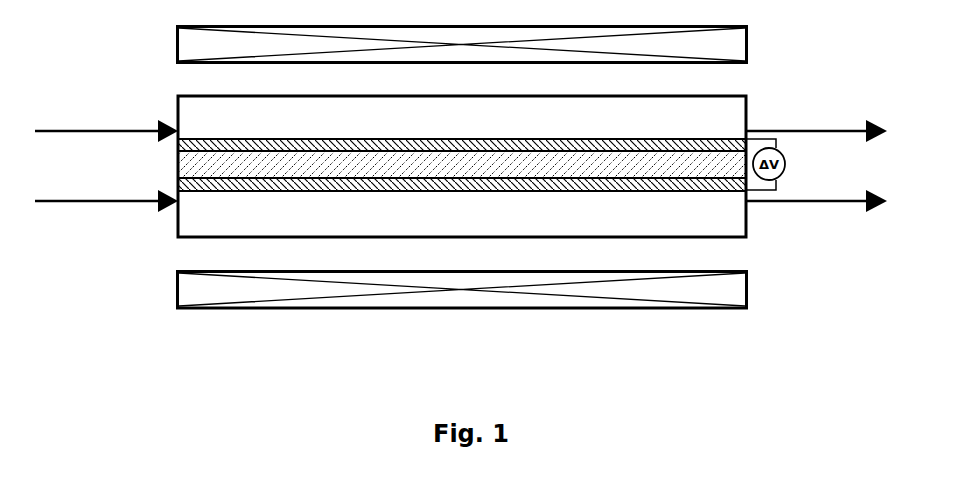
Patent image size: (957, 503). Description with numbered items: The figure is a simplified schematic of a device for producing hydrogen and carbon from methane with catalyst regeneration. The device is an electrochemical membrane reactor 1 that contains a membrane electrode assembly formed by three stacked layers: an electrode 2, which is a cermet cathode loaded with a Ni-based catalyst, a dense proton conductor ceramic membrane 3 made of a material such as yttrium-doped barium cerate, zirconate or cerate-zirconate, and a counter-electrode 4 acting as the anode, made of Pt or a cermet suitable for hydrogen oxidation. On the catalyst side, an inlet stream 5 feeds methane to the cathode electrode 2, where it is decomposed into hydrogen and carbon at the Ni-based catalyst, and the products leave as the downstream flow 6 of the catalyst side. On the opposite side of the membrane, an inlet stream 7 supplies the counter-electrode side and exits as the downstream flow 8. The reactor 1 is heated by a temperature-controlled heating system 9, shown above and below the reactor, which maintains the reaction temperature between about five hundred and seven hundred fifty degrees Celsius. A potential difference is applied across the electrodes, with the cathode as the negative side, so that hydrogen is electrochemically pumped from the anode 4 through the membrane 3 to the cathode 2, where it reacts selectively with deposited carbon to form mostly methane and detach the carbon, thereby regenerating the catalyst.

The electrochemical reactor 1 is at (215, 237).
The electrode including the catalyst 2 is at (628, 145).
The proton conductor ceramic membrane 3 is at (457, 165).
The counter-electrode 4 is at (280, 183).
The inlet stream of the catalyst side 5 is at (107, 131).
The downstream flow of the catalyst side 6 is at (817, 131).
The inlet stream of the counter-electrode side 7 is at (107, 201).
The downstream flow of the counter-electrode side 8 is at (817, 201).
The heating system 9 is at (708, 40).